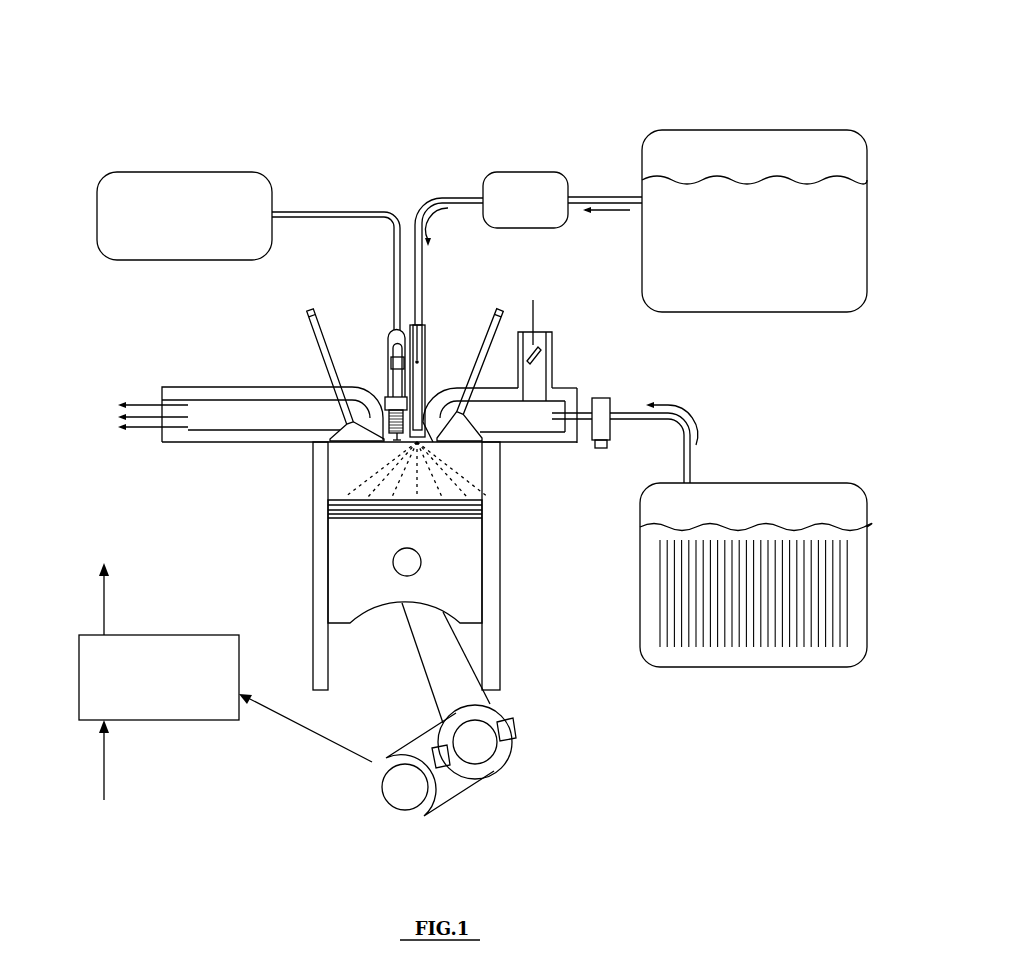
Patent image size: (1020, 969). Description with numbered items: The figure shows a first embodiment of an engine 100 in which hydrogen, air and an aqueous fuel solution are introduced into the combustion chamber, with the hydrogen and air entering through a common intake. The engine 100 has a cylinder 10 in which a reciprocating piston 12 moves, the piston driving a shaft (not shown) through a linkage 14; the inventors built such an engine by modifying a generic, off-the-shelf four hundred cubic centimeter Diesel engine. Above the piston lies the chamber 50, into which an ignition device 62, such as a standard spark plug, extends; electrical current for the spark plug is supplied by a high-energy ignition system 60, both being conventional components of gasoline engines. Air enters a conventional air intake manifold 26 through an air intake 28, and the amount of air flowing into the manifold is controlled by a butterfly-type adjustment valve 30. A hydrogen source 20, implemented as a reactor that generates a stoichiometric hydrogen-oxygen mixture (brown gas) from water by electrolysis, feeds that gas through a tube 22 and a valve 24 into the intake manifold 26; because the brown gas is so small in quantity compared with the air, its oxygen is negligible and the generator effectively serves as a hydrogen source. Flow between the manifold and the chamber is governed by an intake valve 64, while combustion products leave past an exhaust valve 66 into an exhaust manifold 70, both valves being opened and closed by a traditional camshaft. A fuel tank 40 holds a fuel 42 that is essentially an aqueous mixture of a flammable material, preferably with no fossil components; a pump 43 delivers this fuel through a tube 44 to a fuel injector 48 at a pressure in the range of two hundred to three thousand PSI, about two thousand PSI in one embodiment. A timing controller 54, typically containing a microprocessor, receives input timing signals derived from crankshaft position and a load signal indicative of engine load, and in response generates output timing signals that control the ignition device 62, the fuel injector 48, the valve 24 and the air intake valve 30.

The engine 100 is at (472, 40).
The cylinder 10 is at (323, 527).
The reciprocating piston 12 is at (452, 575).
The linkage 14 is at (492, 712).
The hydrogen source 20 is at (760, 493).
The tube 22 is at (687, 460).
The valve 24 is at (600, 438).
The air intake manifold 26 is at (512, 420).
The air intake 28 is at (537, 388).
The butterfly-type adjustment valve 30 is at (540, 343).
The fuel tank 40 is at (662, 147).
The fuel 42 is at (753, 288).
The pump 43 is at (497, 183).
The tube 44 is at (455, 198).
The fuel injector 48 is at (413, 327).
The chamber 50 is at (342, 482).
The timing controller 54 is at (104, 657).
The high-energy ignition system 60 is at (250, 190).
The ignition device 62 is at (395, 388).
The intake valve 64 is at (488, 343).
The exhaust valve 66 is at (318, 328).
The exhaust manifold 70 is at (198, 420).